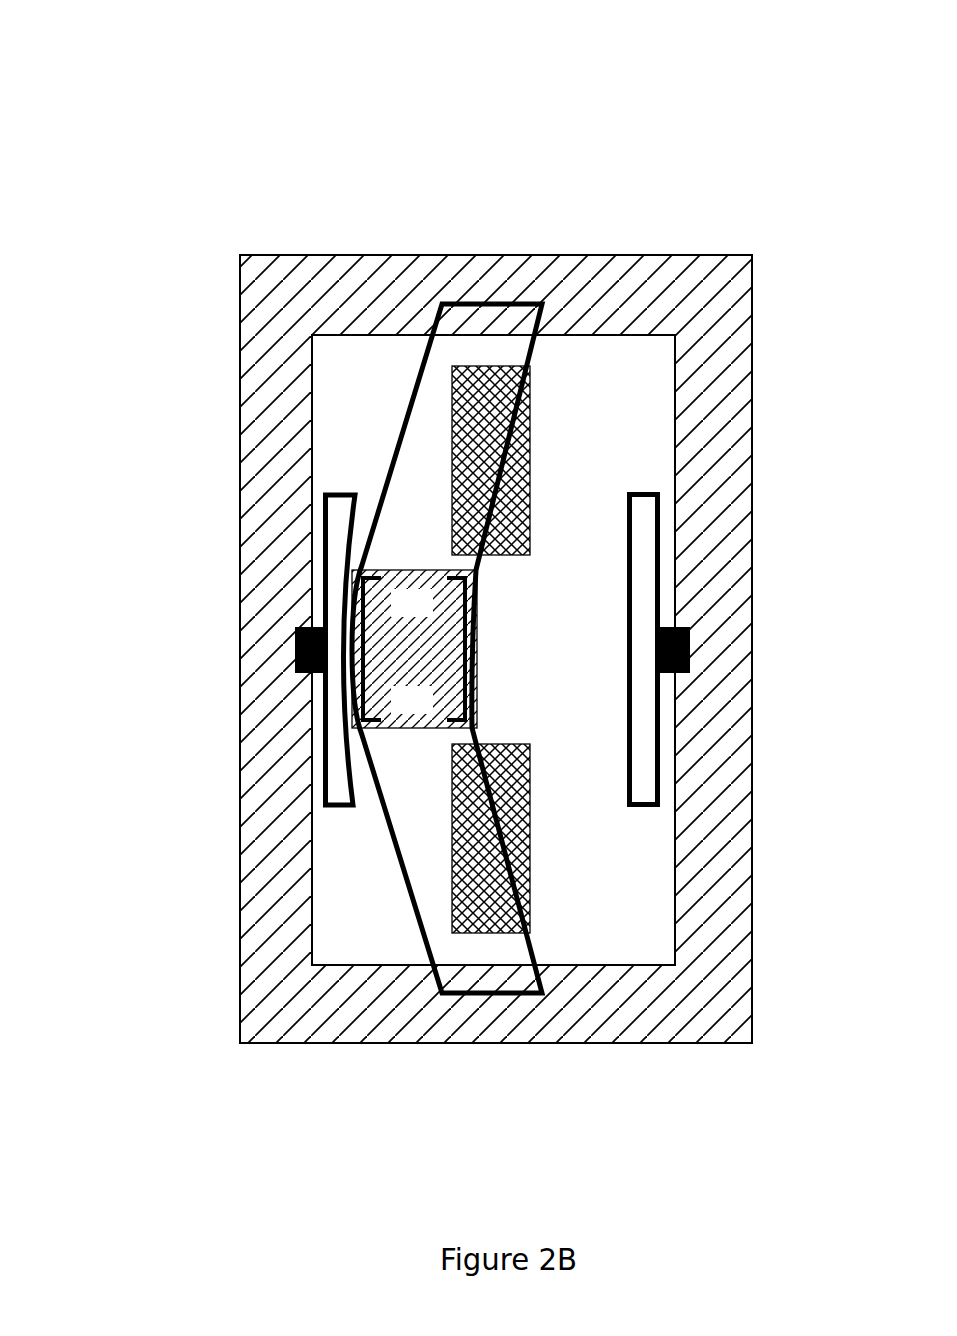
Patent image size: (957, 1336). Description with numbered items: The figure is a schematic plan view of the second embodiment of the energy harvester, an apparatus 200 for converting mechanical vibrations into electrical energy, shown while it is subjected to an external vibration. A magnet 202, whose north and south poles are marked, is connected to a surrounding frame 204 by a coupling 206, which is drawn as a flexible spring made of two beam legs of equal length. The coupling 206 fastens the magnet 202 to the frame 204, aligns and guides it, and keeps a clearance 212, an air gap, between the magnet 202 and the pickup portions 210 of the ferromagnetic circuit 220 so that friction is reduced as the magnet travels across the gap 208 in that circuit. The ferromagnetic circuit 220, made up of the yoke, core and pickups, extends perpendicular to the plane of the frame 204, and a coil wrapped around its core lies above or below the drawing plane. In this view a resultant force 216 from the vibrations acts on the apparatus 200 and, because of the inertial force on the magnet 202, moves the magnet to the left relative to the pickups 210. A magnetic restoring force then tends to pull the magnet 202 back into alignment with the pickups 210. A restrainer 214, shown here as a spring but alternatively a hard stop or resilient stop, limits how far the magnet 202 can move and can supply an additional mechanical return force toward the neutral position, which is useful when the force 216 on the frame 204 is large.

The apparatus for converting mechanical vibrations into electrical energy 200 is at (677, 82).
The magnet 202 is at (485, 592).
The frame 204 is at (717, 313).
The coupling 206 is at (538, 358).
The gap 208 is at (528, 650).
The pickup portions 210 is at (467, 412).
The clearance 212 is at (442, 555).
The restrainer 214 is at (317, 567).
The resultant force 216 is at (367, 650).
The ferromagnetic circuit 220 is at (423, 795).